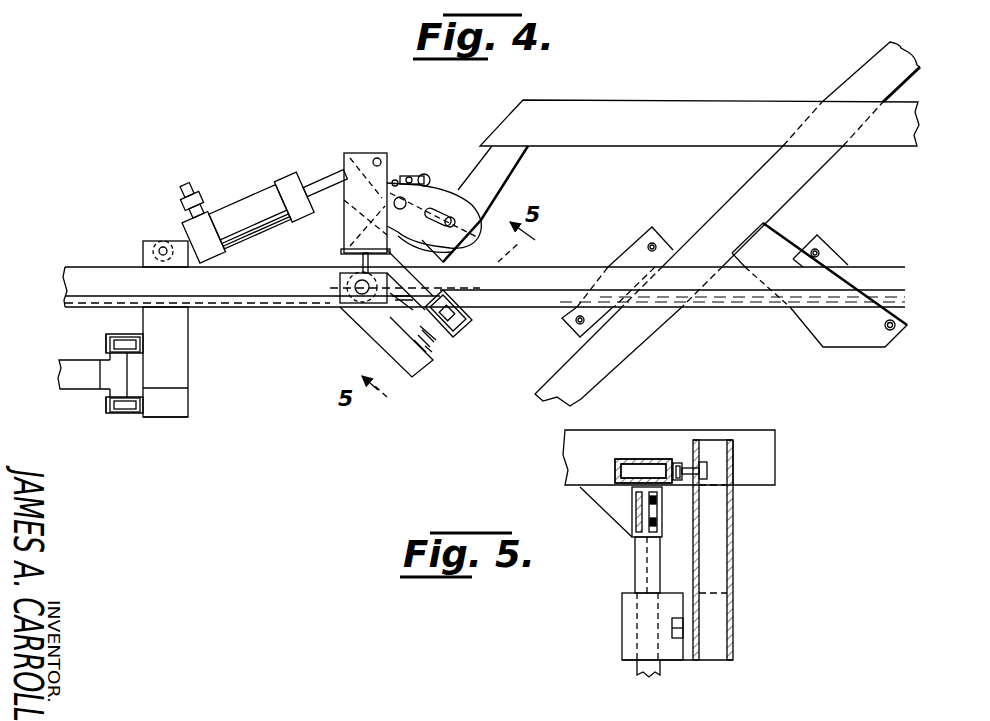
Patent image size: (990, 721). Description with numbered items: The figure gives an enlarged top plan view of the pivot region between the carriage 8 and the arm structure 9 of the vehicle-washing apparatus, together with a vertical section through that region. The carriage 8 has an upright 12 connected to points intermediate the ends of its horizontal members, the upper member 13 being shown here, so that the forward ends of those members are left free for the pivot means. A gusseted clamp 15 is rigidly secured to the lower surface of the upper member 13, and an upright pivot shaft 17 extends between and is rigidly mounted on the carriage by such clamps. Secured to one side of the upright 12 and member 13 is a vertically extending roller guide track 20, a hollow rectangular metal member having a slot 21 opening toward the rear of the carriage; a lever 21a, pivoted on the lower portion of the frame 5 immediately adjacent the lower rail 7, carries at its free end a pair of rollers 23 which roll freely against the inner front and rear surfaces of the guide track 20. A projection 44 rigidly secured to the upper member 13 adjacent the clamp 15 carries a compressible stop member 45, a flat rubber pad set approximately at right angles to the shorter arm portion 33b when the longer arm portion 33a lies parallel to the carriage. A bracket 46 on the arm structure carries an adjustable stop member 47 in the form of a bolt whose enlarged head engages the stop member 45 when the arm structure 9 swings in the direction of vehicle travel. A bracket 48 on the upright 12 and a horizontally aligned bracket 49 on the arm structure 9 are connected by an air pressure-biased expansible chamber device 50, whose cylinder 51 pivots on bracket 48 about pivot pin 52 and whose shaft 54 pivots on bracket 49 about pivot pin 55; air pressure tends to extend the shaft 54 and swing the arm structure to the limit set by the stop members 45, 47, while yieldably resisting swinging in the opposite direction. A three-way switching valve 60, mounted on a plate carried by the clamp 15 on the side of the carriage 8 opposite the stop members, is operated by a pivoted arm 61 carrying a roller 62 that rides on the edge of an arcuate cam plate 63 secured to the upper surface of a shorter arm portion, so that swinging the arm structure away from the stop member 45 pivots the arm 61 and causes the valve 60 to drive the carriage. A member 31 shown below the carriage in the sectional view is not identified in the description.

In FIG. 4, the frame 5 is at (921, 74).
In FIG. 4, the lower rail 7 is at (850, 280).
In FIG. 4, the carriage 8 is at (178, 420).
In FIG. 4, the arm structure 9 is at (645, 93).
In FIG. 4, the upright 12 is at (189, 339).
In FIG. 4, the upper member 13 is at (249, 293).
In FIG. 5, the upper member 13 is at (572, 456).
In FIG. 5, the gusseted clamp 15 is at (633, 513).
In FIG. 4, the upright pivot shaft 17 is at (346, 280).
In FIG. 5, the upright pivot shaft 17 is at (640, 670).
In FIG. 4, the roller guide track 20 is at (108, 413).
In FIG. 4, the slot 21 is at (108, 350).
In FIG. 4, the lever 21a is at (63, 375).
In FIG. 4, the rollers 23 is at (122, 341).
In FIG. 5, the block 31 is at (630, 617).
In FIG. 4, the longer arm portion 33a is at (780, 115).
In FIG. 4, the shorter arm portion 33b is at (482, 152).
In FIG. 4, the projection 44 is at (362, 318).
In FIG. 5, the projection 44 is at (628, 458).
In FIG. 4, the stop member 45 is at (428, 352).
In FIG. 5, the stop member 45 is at (670, 462).
In FIG. 4, the bracket 46 is at (472, 318).
In FIG. 5, the bracket 46 is at (733, 530).
In FIG. 4, the adjustable stop member 47 is at (450, 332).
In FIG. 5, the adjustable stop member 47 is at (697, 460).
In FIG. 4, the bracket 48 is at (144, 245).
In FIG. 4, the bracket 49 is at (363, 150).
In FIG. 4, the air pressure-biased expansible chamber device 50 is at (233, 200).
In FIG. 4, the cylinder 51 is at (262, 200).
In FIG. 4, the pivot pin 52 is at (163, 246).
In FIG. 4, the shaft 54 is at (321, 188).
In FIG. 4, the pivot pin 55 is at (394, 176).
In FIG. 4, the three-way switching valve 60 is at (352, 153).
In FIG. 5, the three-way switching valve 60 is at (750, 445).
In FIG. 4, the pivoted arm 61 is at (410, 176).
In FIG. 4, the roller 62 is at (426, 175).
In FIG. 4, the arcuate cam plate 63 is at (478, 228).